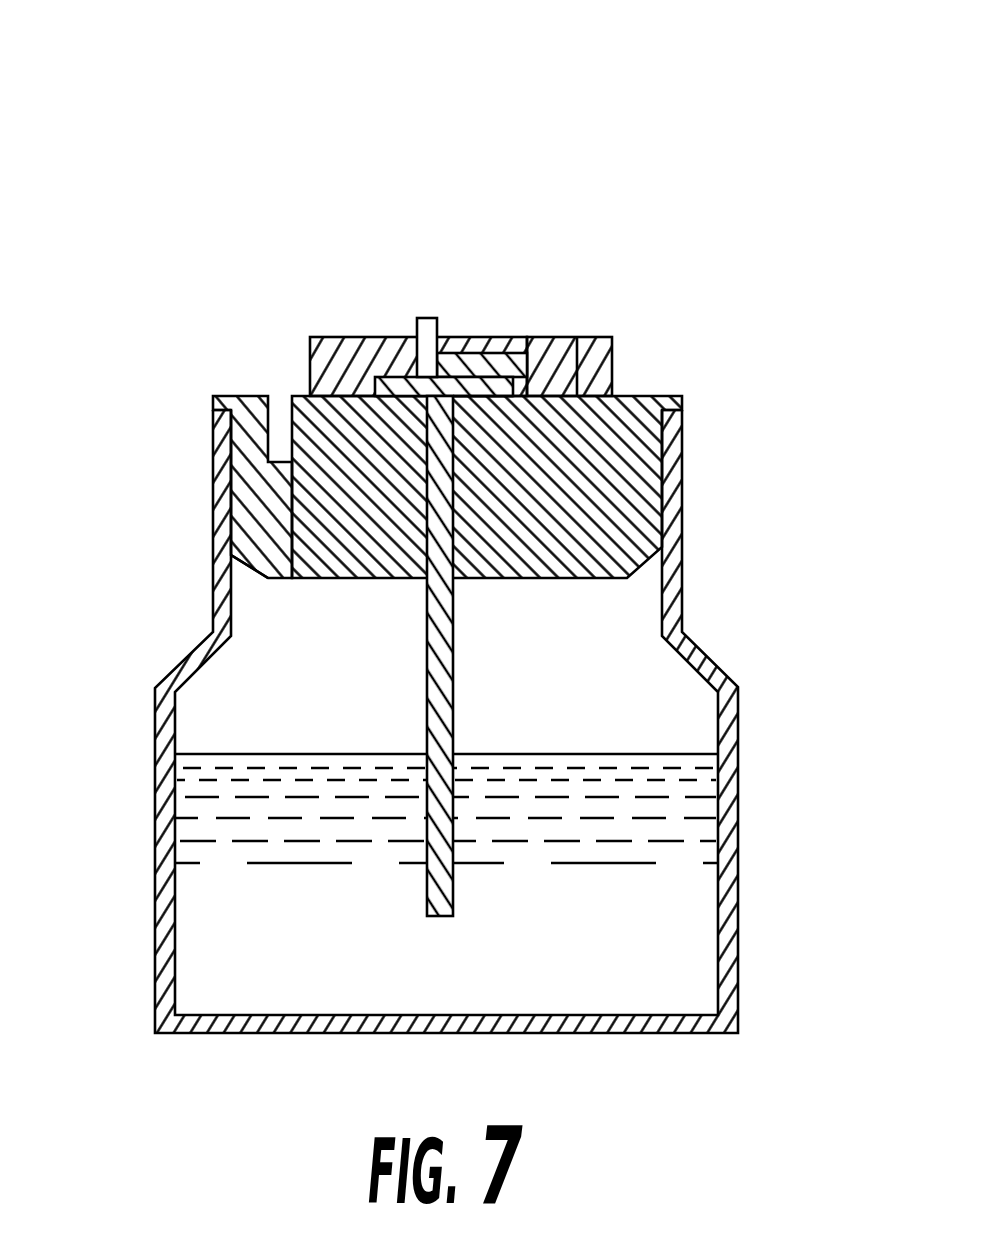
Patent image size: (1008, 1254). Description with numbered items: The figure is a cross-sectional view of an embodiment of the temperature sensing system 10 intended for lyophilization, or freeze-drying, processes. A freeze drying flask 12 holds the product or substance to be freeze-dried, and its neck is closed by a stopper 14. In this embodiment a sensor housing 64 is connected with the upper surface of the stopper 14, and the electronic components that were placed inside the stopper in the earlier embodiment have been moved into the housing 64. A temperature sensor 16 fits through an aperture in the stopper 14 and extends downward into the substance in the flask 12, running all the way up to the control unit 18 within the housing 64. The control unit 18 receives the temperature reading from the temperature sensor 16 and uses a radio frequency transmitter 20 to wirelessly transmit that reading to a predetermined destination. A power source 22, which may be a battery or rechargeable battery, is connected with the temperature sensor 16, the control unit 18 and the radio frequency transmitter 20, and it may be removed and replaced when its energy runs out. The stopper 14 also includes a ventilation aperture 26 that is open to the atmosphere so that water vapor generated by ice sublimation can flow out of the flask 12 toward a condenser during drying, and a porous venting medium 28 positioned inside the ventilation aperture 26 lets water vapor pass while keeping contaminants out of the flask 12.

The temperature sensing system 10 is at (476, 196).
The flask 12 is at (213, 580).
The stopper 14 is at (583, 398).
The temperature sensor 16 is at (427, 710).
The control unit 18 is at (478, 392).
The radio frequency transmitter 20 is at (437, 320).
The power source 22 is at (550, 348).
The ventilation aperture 26 is at (280, 402).
The porous venting medium 28 is at (276, 585).
The sensor housing 64 is at (363, 336).